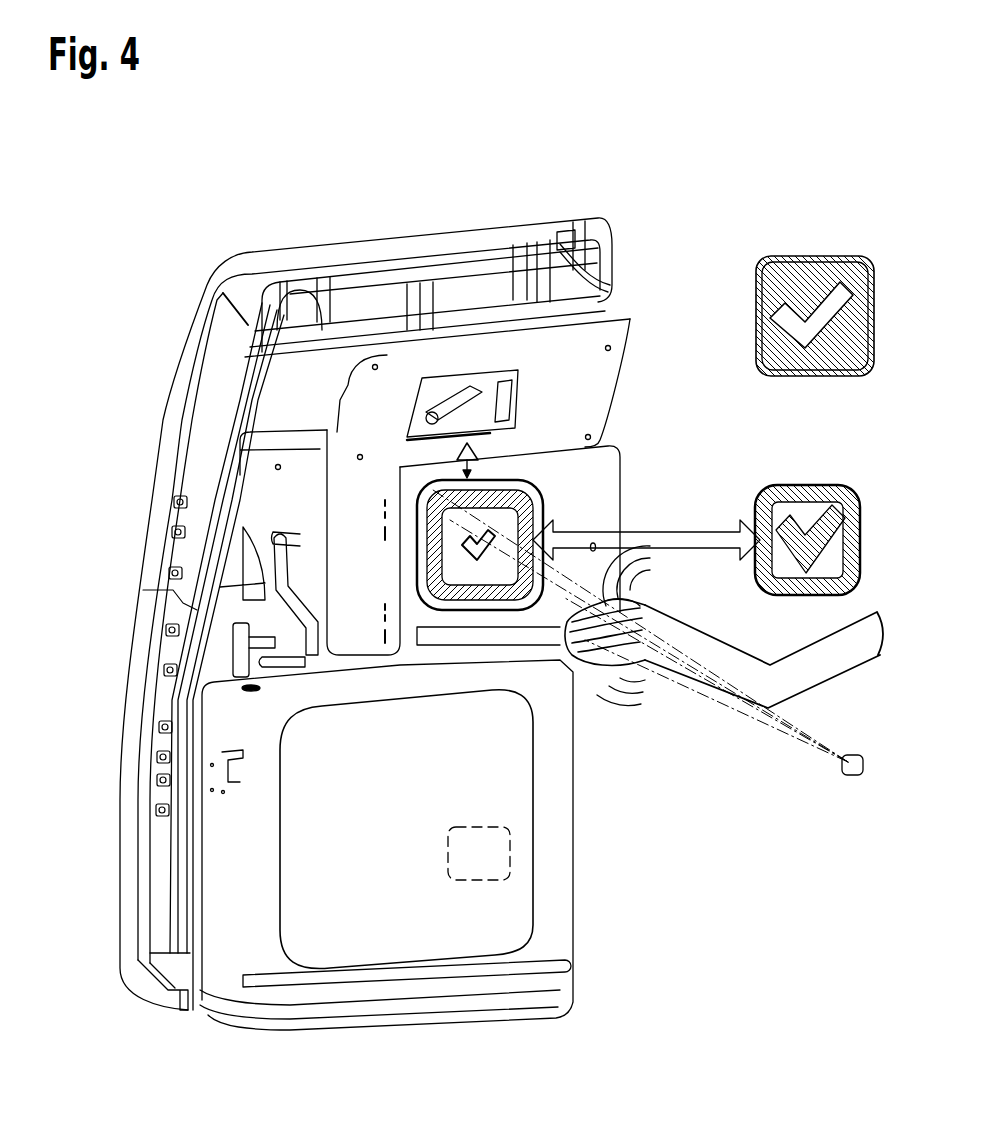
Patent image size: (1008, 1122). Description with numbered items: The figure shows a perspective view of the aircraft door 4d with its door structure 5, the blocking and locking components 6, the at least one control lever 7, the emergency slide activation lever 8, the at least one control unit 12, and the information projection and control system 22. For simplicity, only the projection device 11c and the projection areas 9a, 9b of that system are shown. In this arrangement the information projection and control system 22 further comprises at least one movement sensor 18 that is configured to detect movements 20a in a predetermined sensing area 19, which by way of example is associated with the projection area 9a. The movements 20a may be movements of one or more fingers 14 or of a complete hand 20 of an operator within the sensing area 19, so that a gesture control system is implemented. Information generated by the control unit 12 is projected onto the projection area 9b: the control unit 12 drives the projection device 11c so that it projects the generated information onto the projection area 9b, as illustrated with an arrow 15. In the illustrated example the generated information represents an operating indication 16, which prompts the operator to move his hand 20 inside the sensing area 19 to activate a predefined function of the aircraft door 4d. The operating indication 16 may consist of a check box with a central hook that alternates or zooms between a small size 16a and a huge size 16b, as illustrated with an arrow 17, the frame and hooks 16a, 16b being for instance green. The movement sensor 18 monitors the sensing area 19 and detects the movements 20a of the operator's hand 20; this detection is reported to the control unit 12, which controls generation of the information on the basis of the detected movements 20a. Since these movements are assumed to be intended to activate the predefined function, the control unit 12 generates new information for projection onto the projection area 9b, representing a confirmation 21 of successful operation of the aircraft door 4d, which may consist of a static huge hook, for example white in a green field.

The aircraft door 4d is at (188, 193).
The door structure 5 is at (571, 348).
The blocking and locking components 6 is at (163, 835).
The control lever 7 is at (205, 655).
The emergency slide activation lever 8 is at (455, 386).
The projection area 9a is at (533, 883).
The projection area 9b is at (498, 482).
The projection device 11c is at (515, 442).
The control unit 12 is at (512, 850).
The fingers 14 is at (647, 610).
The arrow 15 is at (505, 478).
The operating indication 16 is at (547, 460).
The small size hook 16a is at (458, 556).
The huge size hook 16b is at (807, 522).
The arrow 17 is at (715, 522).
The movement sensor 18 is at (853, 777).
The sensing area 19 is at (783, 747).
The hand 20 is at (623, 650).
The movements 20a is at (588, 665).
The confirmation 21 is at (812, 250).
The information projection and control system 22 is at (640, 396).